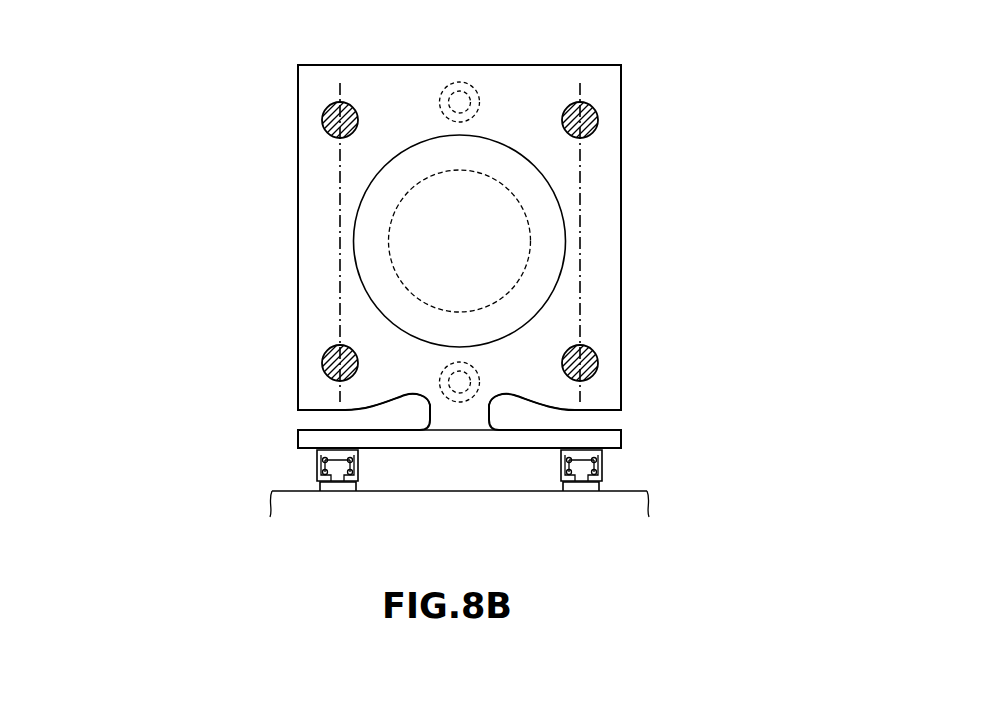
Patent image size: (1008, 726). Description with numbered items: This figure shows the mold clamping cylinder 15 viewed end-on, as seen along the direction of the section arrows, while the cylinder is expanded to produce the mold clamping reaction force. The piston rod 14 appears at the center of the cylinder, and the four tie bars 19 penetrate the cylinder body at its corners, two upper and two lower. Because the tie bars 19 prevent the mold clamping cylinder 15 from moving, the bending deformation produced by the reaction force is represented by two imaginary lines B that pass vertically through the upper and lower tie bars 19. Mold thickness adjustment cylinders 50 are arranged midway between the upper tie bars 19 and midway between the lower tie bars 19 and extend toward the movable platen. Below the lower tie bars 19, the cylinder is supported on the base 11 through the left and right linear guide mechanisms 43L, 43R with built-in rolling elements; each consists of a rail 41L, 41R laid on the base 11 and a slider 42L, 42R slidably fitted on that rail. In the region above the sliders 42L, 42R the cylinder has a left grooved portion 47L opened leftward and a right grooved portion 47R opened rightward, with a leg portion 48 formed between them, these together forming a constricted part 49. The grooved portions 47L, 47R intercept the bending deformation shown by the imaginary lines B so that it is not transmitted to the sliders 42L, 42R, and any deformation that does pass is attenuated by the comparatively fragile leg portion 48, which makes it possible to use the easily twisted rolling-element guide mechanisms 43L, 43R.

The mold clamping cylinder 15 is at (508, 83).
The piston rod 14 is at (530, 240).
The mold thickness adjustment cylinder 50 is at (459, 102).
The tie bar 19 is at (322, 118).
The imaginary line B is at (340, 238).
The left grooved portion 47L is at (422, 410).
The right grooved portion 47R is at (497, 410).
The leg portion 48 is at (458, 435).
The left slider 42L is at (313, 463).
The left rail 41L is at (318, 488).
The left linear guide mechanism 43L is at (247, 450).
The right slider 42R is at (606, 465).
The right rail 41R is at (601, 488).
The right linear guide mechanism 43R is at (678, 450).
The base 11 is at (470, 491).
The constricted part 49 is at (500, 456).